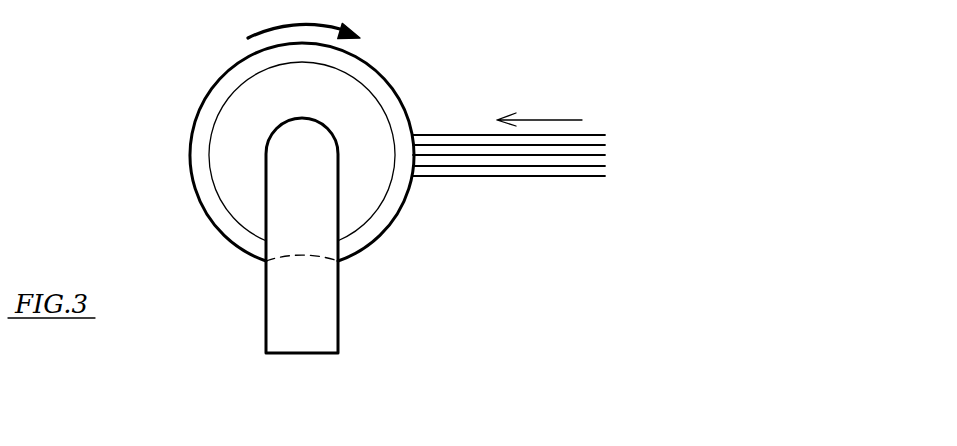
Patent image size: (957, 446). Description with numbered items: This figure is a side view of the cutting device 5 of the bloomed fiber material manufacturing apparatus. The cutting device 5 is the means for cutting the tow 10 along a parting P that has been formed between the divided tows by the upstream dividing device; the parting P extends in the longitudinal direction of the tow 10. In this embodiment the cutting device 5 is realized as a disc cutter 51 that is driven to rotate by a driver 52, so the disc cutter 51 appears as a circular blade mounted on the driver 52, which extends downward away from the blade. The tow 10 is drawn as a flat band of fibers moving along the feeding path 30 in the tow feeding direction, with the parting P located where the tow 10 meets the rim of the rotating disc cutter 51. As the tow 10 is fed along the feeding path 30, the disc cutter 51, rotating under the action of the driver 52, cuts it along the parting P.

The cutting device 5 is at (188, 97).
The disc cutter 51 is at (190, 168).
The driver 52 is at (266, 323).
The tow 10 is at (548, 177).
The feeding path 30 is at (545, 120).
The parting P is at (432, 178).